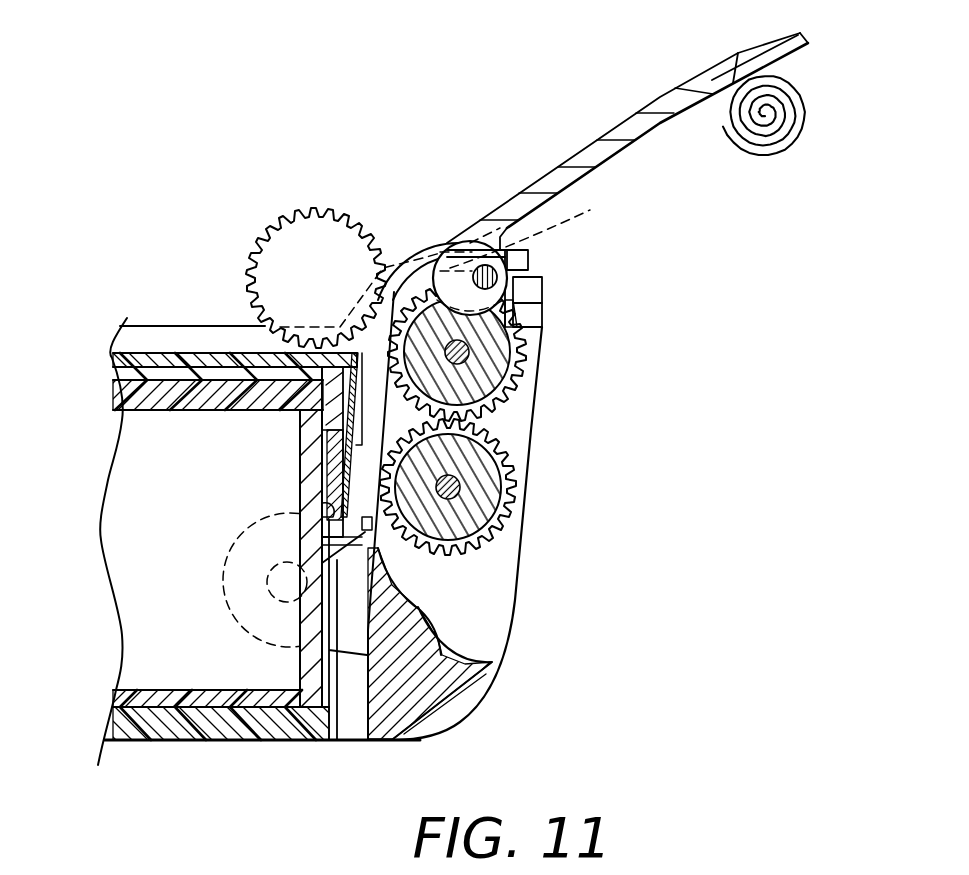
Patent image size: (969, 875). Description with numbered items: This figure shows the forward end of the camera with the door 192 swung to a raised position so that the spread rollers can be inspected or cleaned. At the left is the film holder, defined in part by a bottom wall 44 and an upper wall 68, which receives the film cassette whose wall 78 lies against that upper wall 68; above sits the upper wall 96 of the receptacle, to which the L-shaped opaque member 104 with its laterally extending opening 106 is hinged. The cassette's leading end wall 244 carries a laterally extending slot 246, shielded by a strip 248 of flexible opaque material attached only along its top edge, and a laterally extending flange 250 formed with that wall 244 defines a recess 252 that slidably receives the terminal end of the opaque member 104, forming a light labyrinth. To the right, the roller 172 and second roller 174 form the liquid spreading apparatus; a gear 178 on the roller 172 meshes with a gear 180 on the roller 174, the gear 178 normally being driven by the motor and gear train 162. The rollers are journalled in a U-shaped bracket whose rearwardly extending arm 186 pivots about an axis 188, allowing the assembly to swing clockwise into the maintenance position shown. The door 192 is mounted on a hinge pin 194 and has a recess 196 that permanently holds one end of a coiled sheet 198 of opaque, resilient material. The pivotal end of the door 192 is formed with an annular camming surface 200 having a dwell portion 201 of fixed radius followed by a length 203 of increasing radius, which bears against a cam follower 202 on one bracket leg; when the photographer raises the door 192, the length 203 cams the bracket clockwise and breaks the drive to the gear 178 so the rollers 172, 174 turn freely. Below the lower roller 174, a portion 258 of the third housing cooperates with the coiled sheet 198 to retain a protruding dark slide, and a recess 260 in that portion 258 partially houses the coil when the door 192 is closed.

The bottom wall 44 is at (217, 742).
The upper wall 68 is at (107, 379).
The wall 78 is at (123, 398).
The upper wall 96 is at (110, 363).
The L-shaped opaque member 104 is at (345, 474).
The laterally extending opening 106 is at (330, 443).
The motor and gear train 162 is at (266, 196).
The roller 172 is at (497, 373).
The second roller 174 is at (457, 535).
The gear 178 is at (510, 412).
The gear 180 is at (519, 549).
The arm 186 is at (248, 528).
The axis 188 is at (300, 588).
The door 192 is at (642, 108).
The hinge pin 194 is at (480, 280).
The recess 196 is at (738, 55).
The sheet 198 is at (787, 160).
The annular camming surface 200 is at (537, 285).
The dwell portion 201 is at (598, 211).
The cam follower 202 is at (537, 302).
The length of increasing radius 203 is at (540, 278).
The leading end wall 244 is at (338, 741).
The laterally extending slot 246 is at (300, 425).
The strip of flexible opaque material 248 is at (346, 418).
The laterally extending flange 250 is at (377, 535).
The recess 252 is at (330, 505).
The portion 258 is at (462, 710).
The recess 260 is at (440, 657).